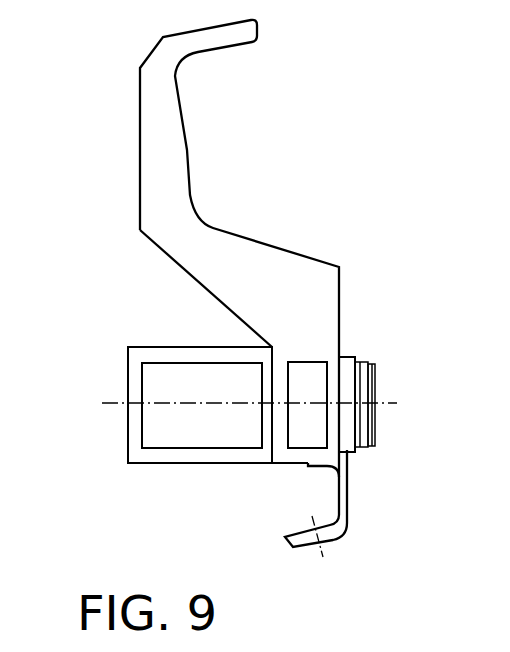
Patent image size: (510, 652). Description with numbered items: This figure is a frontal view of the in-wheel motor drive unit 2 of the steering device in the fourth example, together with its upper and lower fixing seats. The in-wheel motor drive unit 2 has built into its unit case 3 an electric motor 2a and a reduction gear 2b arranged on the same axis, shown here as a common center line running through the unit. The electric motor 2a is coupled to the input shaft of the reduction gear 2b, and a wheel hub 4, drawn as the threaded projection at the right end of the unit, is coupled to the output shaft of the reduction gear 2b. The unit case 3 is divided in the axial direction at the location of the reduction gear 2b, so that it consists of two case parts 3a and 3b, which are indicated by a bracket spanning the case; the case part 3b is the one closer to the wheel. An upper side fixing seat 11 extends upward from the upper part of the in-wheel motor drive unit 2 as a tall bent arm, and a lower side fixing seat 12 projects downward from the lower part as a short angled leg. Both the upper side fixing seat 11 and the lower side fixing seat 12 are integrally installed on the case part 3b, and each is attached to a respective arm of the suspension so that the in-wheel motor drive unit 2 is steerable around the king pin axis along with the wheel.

The in-wheel motor drive unit 2 is at (118, 438).
The electric motor 2a is at (142, 390).
The reduction gear 2b is at (308, 362).
The unit case 3 is at (182, 287).
The case part 3a is at (135, 353).
The case part 3b is at (282, 367).
The wheel hub 4 is at (360, 387).
The upper side fixing seat 11 is at (187, 152).
The lower side fixing seat 12 is at (310, 547).